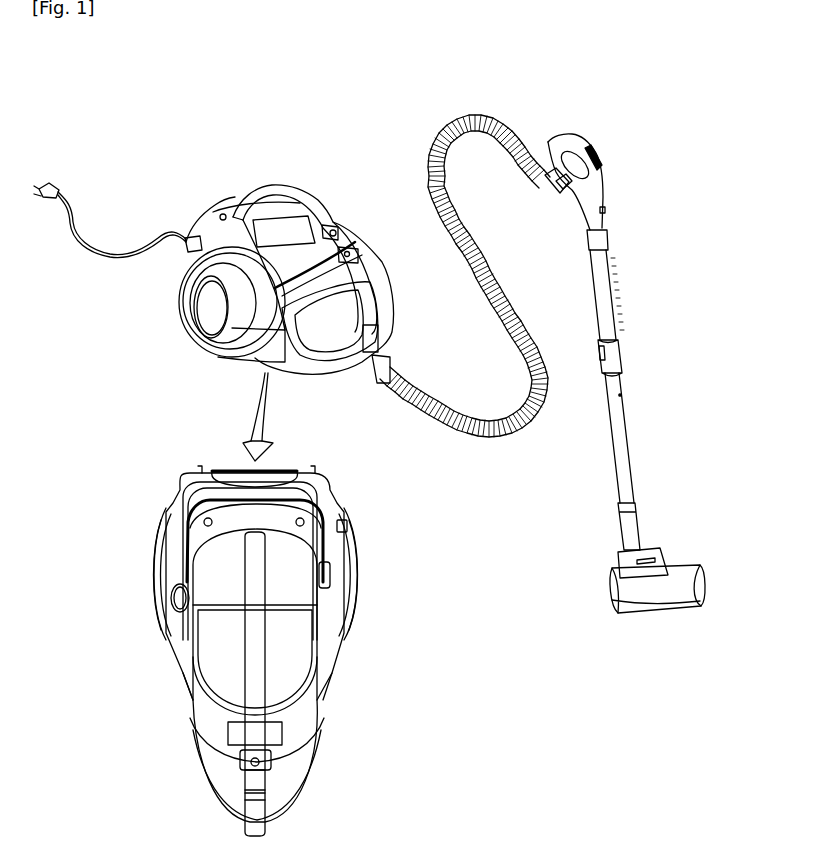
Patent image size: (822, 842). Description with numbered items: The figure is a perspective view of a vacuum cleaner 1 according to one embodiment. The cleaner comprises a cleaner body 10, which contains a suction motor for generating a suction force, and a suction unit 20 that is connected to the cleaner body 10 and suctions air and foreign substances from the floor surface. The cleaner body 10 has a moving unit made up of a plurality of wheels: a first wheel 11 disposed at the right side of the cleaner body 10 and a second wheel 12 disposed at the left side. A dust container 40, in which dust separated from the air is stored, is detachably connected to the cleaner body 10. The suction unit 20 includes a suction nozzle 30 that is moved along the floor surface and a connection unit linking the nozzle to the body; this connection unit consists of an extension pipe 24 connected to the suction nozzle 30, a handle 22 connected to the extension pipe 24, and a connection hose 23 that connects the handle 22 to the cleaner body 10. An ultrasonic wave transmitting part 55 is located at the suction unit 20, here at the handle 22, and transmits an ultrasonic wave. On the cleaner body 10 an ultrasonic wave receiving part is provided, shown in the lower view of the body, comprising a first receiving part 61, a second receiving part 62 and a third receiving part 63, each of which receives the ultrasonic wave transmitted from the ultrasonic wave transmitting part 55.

The vacuum cleaner 1 is at (117, 56).
The cleaner body 10 is at (243, 178).
The first wheel 11 is at (229, 346).
The second wheel 12 is at (355, 576).
The suction unit 20 is at (632, 323).
The handle 22 is at (568, 141).
The connection hose 23 is at (433, 140).
The extension pipe 24 is at (628, 441).
The suction nozzle 30 is at (606, 557).
The dust container 40 is at (334, 327).
The ultrasonic wave transmitting part 55 is at (546, 146).
The first receiving part 61 is at (258, 763).
The second receiving part 62 is at (204, 520).
The third receiving part 63 is at (304, 520).